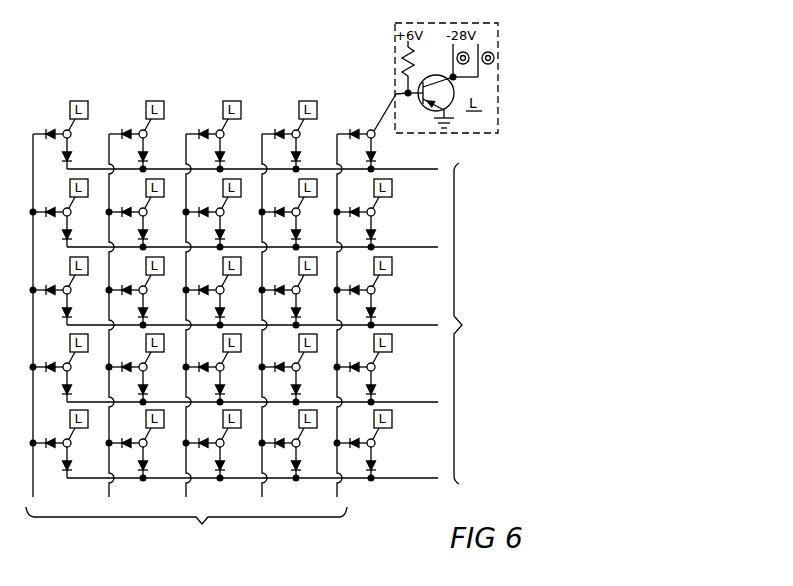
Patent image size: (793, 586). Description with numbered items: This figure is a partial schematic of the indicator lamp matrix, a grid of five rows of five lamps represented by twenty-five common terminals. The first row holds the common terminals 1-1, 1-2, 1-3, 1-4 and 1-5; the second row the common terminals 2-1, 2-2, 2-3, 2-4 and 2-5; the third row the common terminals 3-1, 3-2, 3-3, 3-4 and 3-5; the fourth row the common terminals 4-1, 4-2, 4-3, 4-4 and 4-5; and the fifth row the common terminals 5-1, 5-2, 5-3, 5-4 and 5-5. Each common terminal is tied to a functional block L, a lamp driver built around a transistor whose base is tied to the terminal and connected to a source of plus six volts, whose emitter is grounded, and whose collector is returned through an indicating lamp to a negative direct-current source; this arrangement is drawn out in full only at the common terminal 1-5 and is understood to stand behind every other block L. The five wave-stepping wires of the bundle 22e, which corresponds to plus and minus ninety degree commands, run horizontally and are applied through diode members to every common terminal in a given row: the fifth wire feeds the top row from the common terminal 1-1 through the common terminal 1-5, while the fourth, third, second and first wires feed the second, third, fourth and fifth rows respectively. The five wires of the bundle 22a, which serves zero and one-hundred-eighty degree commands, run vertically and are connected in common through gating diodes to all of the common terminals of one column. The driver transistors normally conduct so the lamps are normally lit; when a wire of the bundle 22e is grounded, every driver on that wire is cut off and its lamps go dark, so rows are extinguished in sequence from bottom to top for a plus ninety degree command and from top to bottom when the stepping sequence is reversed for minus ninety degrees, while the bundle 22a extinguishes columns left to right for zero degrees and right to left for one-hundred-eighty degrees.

The bundle of control wires 22a is at (199, 519).
The bundle of control wires 22e is at (462, 326).
The common terminal 1-1 is at (63, 135).
The common terminal 1-2 is at (139, 135).
The common terminal 1-3 is at (216, 135).
The common terminal 1-4 is at (292, 135).
The common terminal 1-5 is at (356, 140).
The common terminal 2-1 is at (63, 213).
The common terminal 2-2 is at (139, 213).
The common terminal 2-3 is at (216, 213).
The common terminal 2-4 is at (292, 213).
The common terminal 2-5 is at (367, 213).
The common terminal 3-1 is at (63, 291).
The common terminal 3-2 is at (139, 291).
The common terminal 3-3 is at (216, 291).
The common terminal 3-4 is at (292, 291).
The common terminal 3-5 is at (367, 291).
The common terminal 4-1 is at (63, 368).
The common terminal 4-2 is at (139, 368).
The common terminal 4-3 is at (216, 368).
The common terminal 4-4 is at (292, 368).
The common terminal 4-5 is at (367, 368).
The common terminal 5-1 is at (63, 444).
The common terminal 5-2 is at (139, 444).
The common terminal 5-3 is at (216, 444).
The common terminal 5-4 is at (292, 444).
The common terminal 5-5 is at (367, 444).